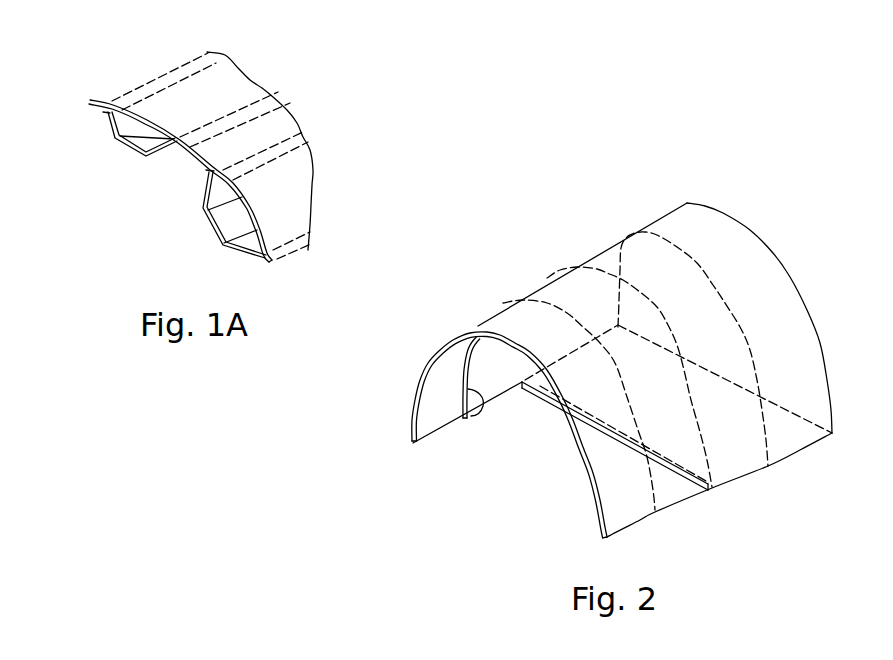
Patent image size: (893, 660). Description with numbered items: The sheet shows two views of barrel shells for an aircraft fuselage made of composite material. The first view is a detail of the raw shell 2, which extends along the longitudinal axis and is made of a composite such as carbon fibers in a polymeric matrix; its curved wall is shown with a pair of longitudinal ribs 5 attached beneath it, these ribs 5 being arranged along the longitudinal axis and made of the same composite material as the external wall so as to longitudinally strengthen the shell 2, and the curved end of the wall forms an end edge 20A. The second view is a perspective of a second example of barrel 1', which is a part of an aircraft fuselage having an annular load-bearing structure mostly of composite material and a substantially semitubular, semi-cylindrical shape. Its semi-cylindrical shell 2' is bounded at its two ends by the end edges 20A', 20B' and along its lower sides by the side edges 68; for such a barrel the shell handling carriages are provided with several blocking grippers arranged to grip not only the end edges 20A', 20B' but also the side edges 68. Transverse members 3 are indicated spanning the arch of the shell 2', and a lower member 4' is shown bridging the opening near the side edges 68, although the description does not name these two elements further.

In FIG. 1A, the end edge 20A is at (180, 131).
In FIG. 1A, the raw shell 2 is at (212, 147).
In FIG. 1A, the longitudinal rib 5 is at (127, 150).
In FIG. 2, the barrel 1' is at (582, 206).
In FIG. 2, the semi-cylindrical shell 2' is at (622, 310).
In FIG. 2, the rib 3 is at (605, 275).
In FIG. 2, the tie bar 4' is at (560, 447).
In FIG. 2, the end edge 20A' is at (448, 435).
In FIG. 2, the end edge 20B' is at (759, 291).
In FIG. 2, the side edge 68 is at (704, 492).